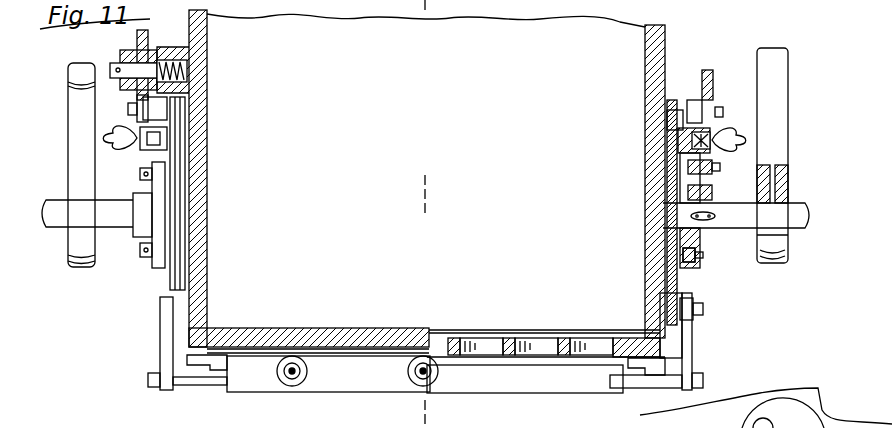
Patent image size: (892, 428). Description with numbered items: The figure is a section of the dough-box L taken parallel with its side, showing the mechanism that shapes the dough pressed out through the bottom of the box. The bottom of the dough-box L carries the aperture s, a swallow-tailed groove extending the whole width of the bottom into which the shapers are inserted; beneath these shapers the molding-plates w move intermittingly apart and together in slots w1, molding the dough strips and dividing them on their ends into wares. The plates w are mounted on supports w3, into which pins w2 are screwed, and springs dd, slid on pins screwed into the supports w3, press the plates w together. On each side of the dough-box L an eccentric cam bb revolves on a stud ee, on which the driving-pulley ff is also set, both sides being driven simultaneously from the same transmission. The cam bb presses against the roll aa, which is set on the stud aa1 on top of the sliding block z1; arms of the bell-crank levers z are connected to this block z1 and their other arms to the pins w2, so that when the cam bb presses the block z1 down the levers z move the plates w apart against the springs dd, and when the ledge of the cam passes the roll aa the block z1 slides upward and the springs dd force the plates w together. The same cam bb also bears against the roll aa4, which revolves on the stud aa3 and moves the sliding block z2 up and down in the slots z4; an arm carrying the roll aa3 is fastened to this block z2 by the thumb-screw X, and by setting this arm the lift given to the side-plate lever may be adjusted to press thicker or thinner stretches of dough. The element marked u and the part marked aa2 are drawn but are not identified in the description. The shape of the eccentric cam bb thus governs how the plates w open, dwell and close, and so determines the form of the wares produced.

The dough-box L is at (411, 214).
The spring plunger u is at (112, 66).
The driving-pulley ff is at (66, 168).
The thumb-screw X is at (427, 123).
The roll aa4 is at (150, 176).
The stud ee is at (425, 215).
The eccentric cam bb is at (143, 235).
The roll aa is at (150, 257).
The bell-crank lever z is at (162, 322).
The pin w2 is at (150, 384).
The slot w1 is at (207, 370).
The support w3 is at (425, 376).
The spring dd is at (309, 372).
The aperture s is at (519, 330).
The plate w is at (480, 358).
The sliding block z2 is at (665, 140).
The slot z4 is at (674, 110).
The stud aa3 is at (712, 105).
The nut aa2 is at (705, 170).
The stud aa1 is at (702, 262).
The sliding block z1 is at (678, 293).